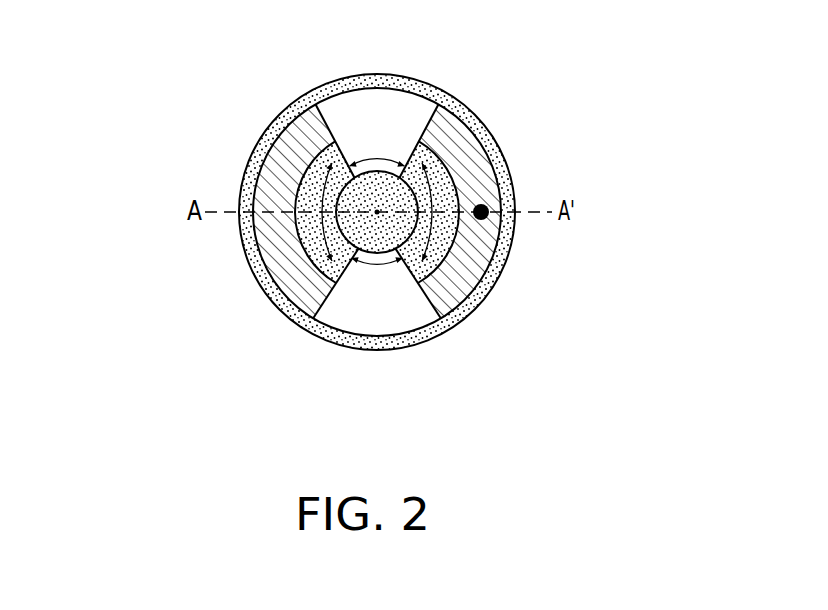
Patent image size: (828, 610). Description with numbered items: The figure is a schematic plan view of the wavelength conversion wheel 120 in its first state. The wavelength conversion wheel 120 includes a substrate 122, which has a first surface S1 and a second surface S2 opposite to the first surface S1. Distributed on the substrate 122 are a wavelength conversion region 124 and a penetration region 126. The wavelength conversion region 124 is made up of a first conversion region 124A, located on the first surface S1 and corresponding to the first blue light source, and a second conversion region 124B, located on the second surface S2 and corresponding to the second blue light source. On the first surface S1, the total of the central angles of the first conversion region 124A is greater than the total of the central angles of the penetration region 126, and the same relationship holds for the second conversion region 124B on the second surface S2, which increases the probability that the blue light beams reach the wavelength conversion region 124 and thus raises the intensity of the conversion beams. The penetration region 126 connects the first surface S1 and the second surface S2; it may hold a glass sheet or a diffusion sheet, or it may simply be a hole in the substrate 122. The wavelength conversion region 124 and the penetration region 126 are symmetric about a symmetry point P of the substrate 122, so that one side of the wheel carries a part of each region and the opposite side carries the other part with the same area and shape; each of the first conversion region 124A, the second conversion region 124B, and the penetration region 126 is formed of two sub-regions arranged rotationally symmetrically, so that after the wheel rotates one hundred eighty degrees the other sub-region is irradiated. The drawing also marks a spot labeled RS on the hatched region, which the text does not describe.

The wavelength conversion wheel 120 is at (578, 430).
The substrate 122 is at (318, 256).
The wavelength conversion region 124 is at (467, 157).
The first conversion region 124A is at (275, 147).
The second conversion region 124B is at (272, 243).
The penetration region 126 is at (345, 110).
The first surface S1 is at (470, 113).
The second surface S2 is at (455, 236).
The reference spot RS is at (486, 202).
The symmetry point P is at (376, 213).